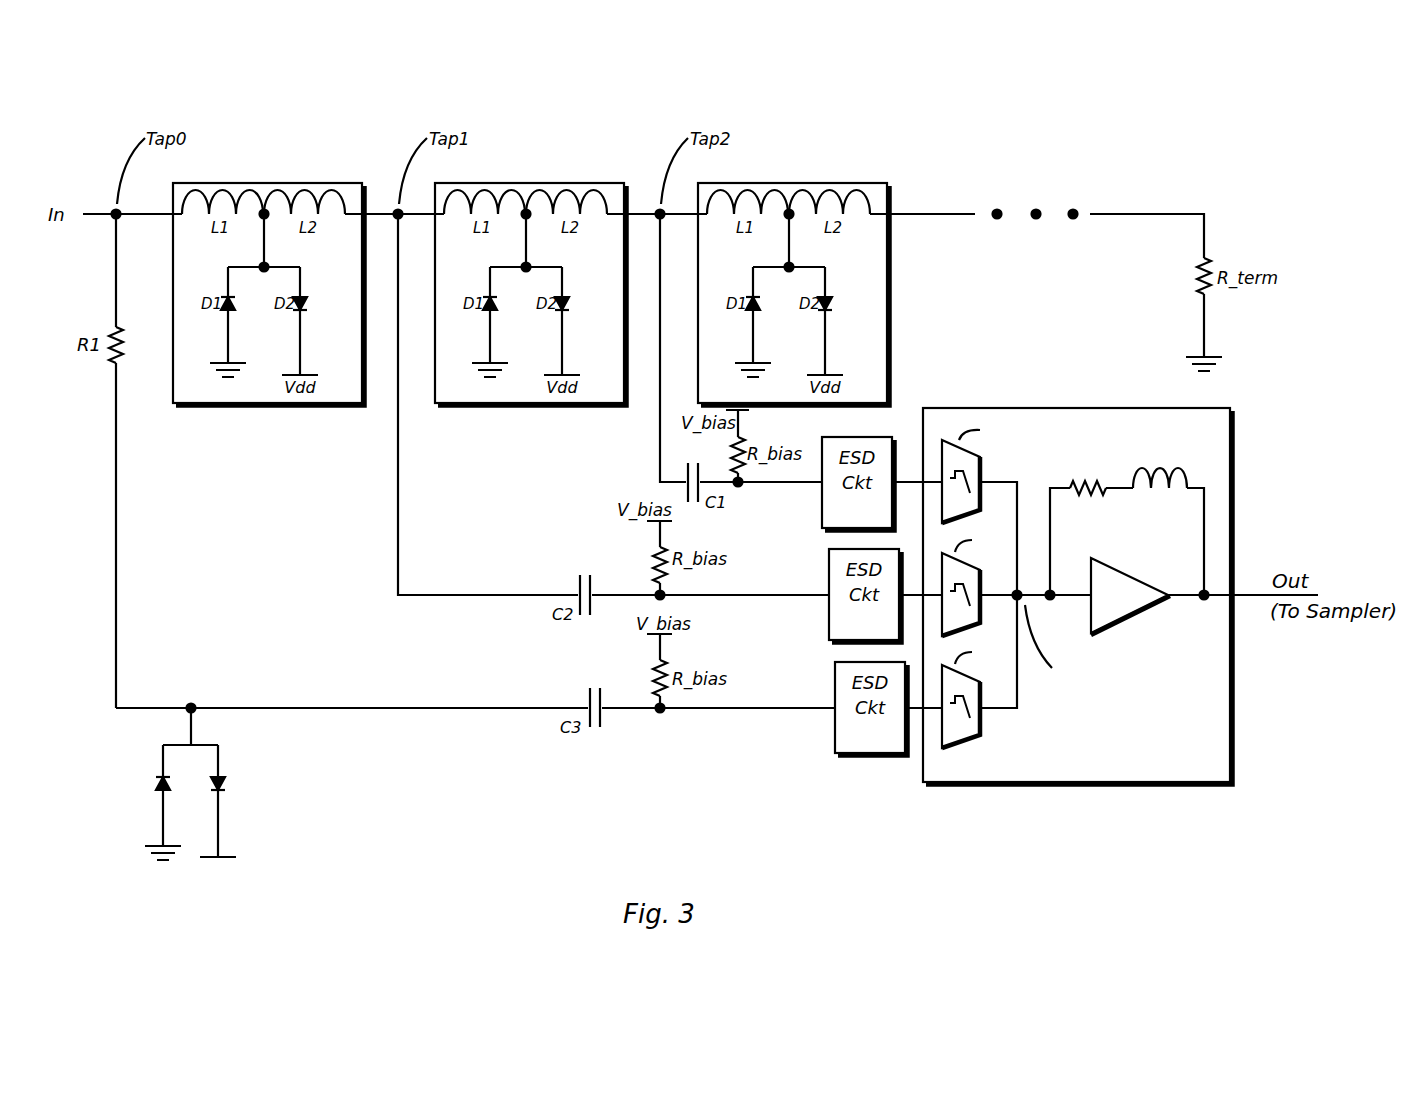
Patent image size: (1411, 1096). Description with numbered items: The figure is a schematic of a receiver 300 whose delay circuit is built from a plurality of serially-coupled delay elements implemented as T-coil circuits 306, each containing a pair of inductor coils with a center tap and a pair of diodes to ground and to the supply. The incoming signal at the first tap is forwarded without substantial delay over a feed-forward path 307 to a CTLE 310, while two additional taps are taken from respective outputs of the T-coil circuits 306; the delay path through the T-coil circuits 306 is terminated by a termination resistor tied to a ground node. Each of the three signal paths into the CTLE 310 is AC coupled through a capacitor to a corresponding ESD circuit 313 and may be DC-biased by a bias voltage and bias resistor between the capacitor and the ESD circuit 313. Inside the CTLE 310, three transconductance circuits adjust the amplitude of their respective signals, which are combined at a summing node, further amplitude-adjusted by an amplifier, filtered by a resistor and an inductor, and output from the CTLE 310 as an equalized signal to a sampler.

The receiver 300 is at (867, 57).
The T-coil circuit 306 is at (257, 183).
The feed-forward path 307 is at (260, 698).
The CTLE 310 is at (1120, 596).
The ESD circuit 313 is at (865, 596).